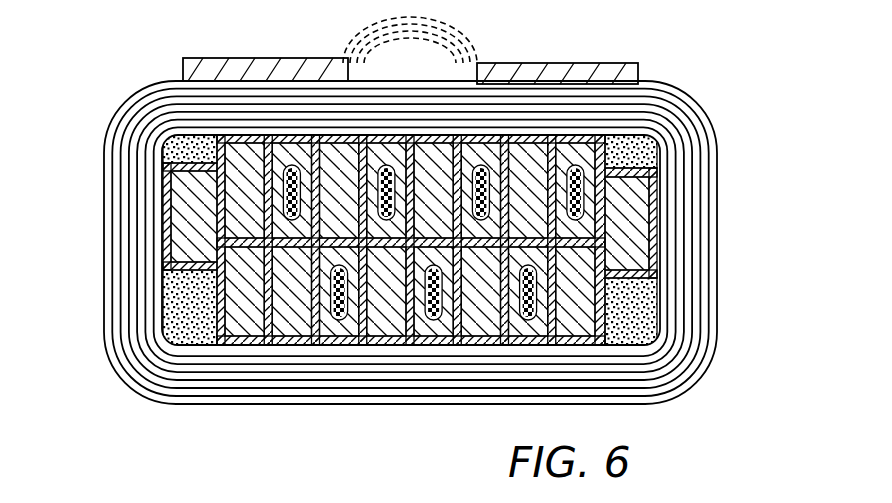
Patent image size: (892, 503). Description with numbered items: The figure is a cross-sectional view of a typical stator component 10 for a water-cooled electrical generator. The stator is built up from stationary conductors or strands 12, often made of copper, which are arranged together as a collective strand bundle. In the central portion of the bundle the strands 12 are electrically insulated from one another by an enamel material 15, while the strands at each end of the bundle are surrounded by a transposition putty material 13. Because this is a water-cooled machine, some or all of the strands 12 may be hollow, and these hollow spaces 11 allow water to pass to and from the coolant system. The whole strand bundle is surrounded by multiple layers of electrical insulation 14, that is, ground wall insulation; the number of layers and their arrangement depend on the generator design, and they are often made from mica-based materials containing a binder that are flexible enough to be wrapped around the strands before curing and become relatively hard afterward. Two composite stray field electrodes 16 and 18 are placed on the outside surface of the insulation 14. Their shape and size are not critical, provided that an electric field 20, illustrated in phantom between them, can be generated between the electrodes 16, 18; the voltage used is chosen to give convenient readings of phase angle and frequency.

The stator component 10 is at (425, 243).
The hollow spaces 11 is at (537, 302).
The strands 12 is at (240, 314).
The transposition putty material 13 is at (410, 240).
The electrical insulation 14 is at (700, 223).
The enamel material 15 is at (313, 342).
The composite stray field electrode 16 is at (557, 62).
The composite stray field electrode 18 is at (262, 58).
The electric field 20 is at (455, 32).